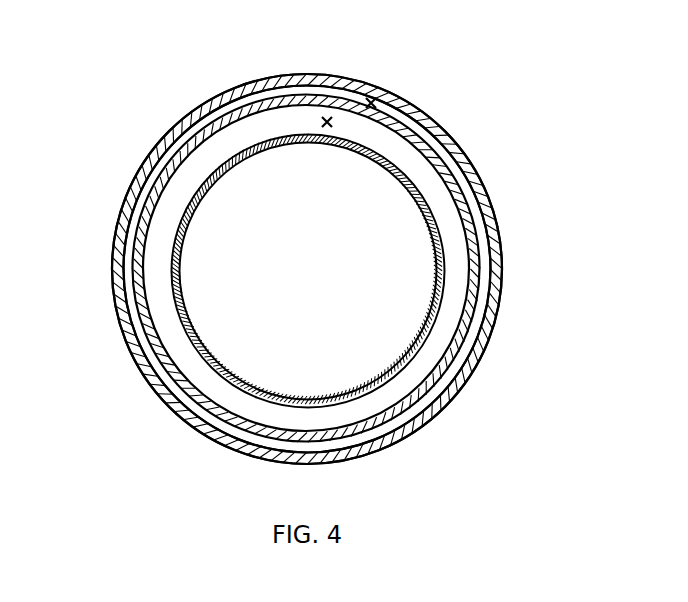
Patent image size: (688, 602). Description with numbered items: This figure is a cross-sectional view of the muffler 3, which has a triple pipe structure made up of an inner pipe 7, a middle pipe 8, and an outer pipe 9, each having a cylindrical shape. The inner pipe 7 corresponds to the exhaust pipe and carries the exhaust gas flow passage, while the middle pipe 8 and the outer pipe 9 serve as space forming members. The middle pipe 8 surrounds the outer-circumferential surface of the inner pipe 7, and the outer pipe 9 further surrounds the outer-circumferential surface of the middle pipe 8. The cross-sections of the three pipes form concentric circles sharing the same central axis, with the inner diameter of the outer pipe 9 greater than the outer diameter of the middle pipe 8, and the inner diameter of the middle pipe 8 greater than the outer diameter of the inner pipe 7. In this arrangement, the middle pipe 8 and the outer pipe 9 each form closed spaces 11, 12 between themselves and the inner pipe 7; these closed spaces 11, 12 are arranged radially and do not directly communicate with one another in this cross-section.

The muffler 3 is at (494, 92).
The inner pipe 7 is at (174, 272).
The middle pipe 8 is at (171, 166).
The outer pipe 9 is at (221, 100).
The closed space 11 is at (327, 117).
The closed space 12 is at (371, 98).